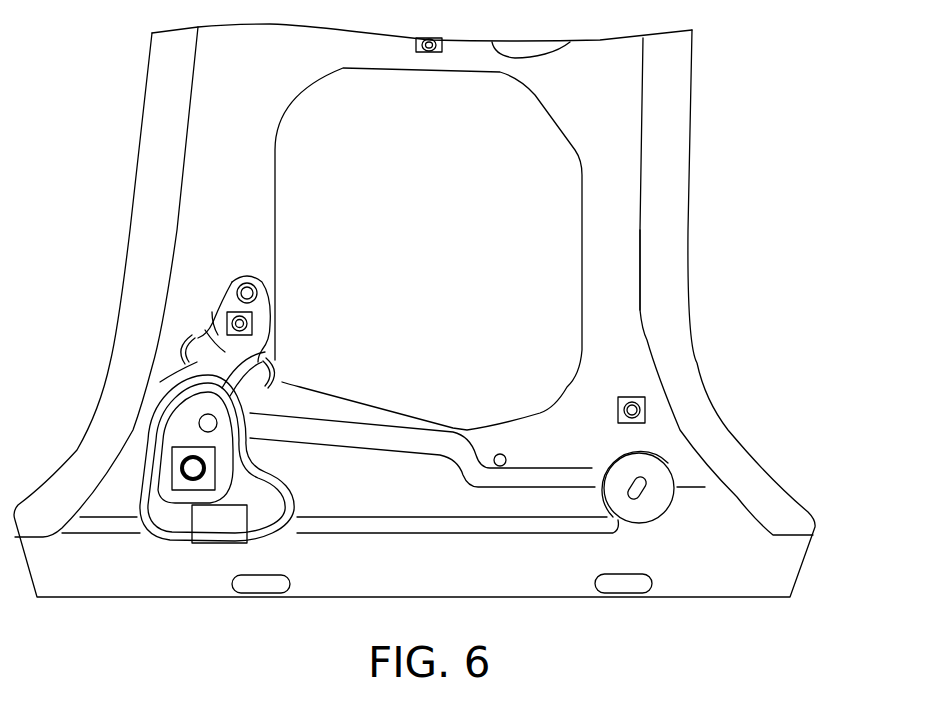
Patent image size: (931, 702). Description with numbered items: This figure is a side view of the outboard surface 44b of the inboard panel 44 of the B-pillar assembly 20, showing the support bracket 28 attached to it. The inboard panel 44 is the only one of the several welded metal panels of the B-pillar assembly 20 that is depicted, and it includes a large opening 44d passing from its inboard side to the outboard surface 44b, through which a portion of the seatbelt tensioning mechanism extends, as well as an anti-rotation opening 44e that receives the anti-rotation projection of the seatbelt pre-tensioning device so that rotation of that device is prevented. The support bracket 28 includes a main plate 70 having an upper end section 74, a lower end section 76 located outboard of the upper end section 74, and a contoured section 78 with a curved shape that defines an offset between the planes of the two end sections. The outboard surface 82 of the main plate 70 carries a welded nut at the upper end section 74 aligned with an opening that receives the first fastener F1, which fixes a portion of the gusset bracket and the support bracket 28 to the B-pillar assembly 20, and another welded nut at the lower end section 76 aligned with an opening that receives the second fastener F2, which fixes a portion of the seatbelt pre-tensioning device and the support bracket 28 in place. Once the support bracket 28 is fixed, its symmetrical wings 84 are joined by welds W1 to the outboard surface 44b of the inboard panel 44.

The B-pillar assembly 20 is at (690, 126).
The inboard panel 44 is at (612, 180).
The outboard surface 44b is at (605, 278).
The opening 44d is at (276, 205).
The anti-rotation opening 44e is at (245, 522).
The main plate 70 is at (227, 303).
The upper end section 74 is at (258, 311).
The lower end section 76 is at (183, 430).
The contoured section 78 is at (266, 352).
The outboard surface 82 is at (230, 348).
The symmetrical wings 84 is at (198, 358).
The support bracket 28 is at (207, 330).
The fastener F1 is at (223, 310).
The fastener F2 is at (180, 467).
The welds W1 is at (177, 348).